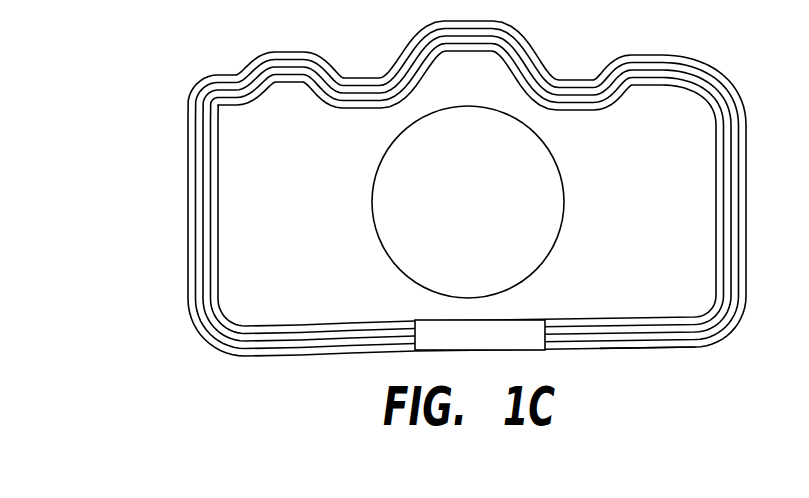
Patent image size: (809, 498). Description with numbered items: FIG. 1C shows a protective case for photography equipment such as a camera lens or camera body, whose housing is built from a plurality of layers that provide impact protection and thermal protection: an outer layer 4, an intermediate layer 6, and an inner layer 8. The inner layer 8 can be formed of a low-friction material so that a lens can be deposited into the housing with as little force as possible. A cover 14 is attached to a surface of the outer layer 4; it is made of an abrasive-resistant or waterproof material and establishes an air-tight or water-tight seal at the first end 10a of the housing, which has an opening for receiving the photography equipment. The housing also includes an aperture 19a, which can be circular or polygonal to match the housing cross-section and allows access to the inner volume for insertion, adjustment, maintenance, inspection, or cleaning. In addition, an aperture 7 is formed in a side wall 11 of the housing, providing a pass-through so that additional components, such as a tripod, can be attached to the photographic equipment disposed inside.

The first end 10a is at (243, 159).
The cover 14 is at (188, 209).
The outer layer 4 is at (198, 303).
The intermediate layer 6 is at (210, 320).
The inner layer 8 is at (293, 328).
The aperture 7 is at (477, 335).
The side wall 11 is at (643, 350).
The aperture 19a is at (525, 190).